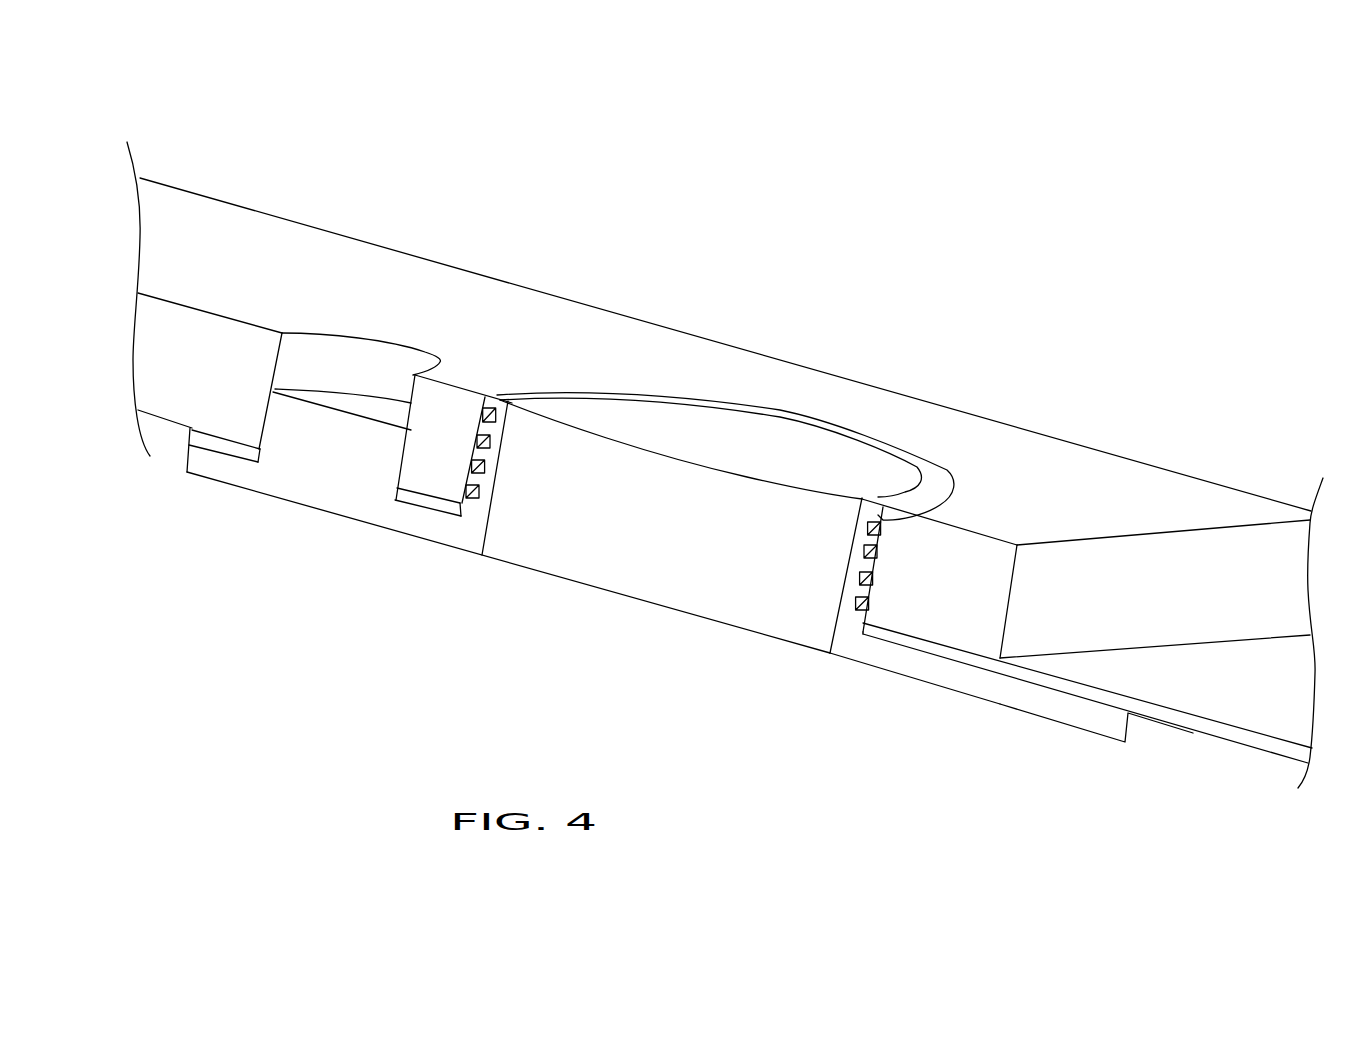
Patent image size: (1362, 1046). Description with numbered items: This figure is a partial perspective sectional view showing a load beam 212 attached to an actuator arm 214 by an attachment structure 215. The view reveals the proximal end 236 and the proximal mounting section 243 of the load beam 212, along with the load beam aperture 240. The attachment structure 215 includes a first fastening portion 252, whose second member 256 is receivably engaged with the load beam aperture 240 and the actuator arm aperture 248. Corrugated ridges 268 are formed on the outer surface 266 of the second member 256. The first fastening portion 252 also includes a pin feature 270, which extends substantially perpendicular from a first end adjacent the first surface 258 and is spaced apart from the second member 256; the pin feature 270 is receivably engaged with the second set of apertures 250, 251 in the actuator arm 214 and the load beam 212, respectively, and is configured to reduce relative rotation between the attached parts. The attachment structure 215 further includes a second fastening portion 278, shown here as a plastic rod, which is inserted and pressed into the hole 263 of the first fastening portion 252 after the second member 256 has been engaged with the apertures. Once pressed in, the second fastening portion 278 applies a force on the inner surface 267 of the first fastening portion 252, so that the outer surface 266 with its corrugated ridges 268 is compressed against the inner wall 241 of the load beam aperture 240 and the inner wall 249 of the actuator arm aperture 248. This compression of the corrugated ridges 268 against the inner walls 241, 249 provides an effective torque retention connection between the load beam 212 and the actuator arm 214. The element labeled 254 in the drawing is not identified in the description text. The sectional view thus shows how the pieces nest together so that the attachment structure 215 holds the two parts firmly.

The load beam 212 is at (1015, 673).
The actuator arm 214 is at (297, 255).
The attachment structure 215 is at (811, 384).
The proximal end 236 is at (190, 437).
The load beam aperture 240 is at (458, 517).
The inner wall of load beam aperture 241 is at (860, 633).
The proximal mounting section 243 is at (892, 646).
The actuator arm aperture 248 is at (476, 428).
The inner wall of actuator aperture 249 is at (935, 507).
The second set aperture of actuator arm 250 is at (267, 400).
The second set aperture of load beam 251 is at (250, 452).
The first fastening portion 252 is at (860, 678).
The first block 254 is at (462, 537).
The second member 256 is at (493, 450).
The first surface 258 is at (402, 530).
The hole 263 is at (852, 532).
The outer surface 266 is at (875, 592).
The inner surface 267 is at (843, 567).
The corrugated ridges 268 is at (496, 382).
The pin feature 270 is at (308, 440).
The second fastening portion 278 is at (827, 448).